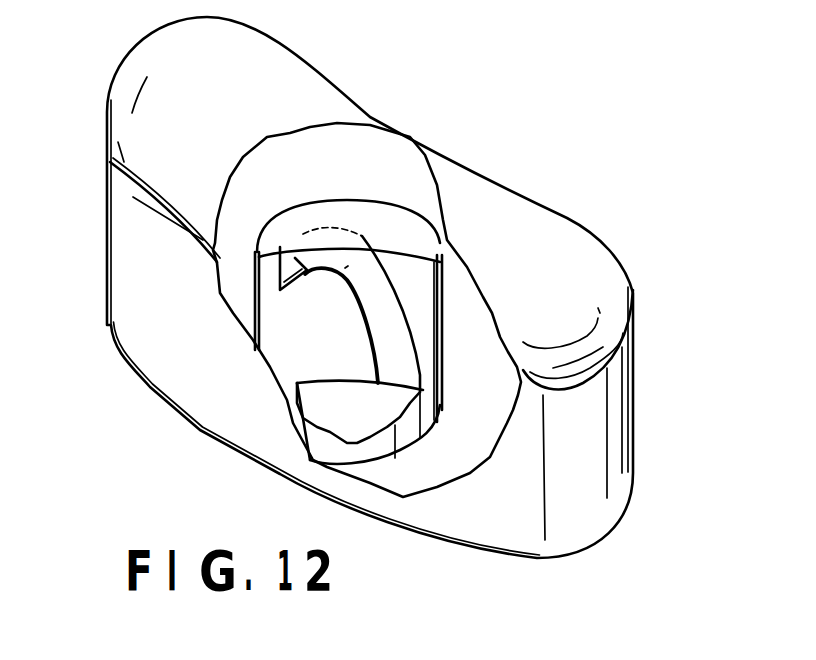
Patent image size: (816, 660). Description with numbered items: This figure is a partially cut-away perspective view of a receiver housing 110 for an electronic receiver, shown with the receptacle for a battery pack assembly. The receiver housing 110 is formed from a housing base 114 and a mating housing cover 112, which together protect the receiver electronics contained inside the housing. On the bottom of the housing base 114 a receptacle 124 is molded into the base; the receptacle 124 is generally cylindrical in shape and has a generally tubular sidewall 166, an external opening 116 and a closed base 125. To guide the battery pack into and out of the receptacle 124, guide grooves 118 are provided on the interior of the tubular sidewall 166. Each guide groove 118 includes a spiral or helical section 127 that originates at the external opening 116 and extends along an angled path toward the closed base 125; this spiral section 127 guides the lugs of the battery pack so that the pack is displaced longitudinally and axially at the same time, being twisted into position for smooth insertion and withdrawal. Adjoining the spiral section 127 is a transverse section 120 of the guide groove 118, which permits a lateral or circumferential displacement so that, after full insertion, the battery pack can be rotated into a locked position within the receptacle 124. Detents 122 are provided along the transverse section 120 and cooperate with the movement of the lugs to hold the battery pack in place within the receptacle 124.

The receiver housing 110 is at (440, 112).
The housing cover 112 is at (510, 217).
The housing base 114 is at (613, 437).
The external opening 116 is at (330, 404).
The guide grooves 118 is at (368, 295).
The transverse section 120 is at (285, 252).
The detents 122 is at (307, 270).
The receptacle 124 is at (360, 372).
The closed base 125 is at (388, 220).
The spiral section 127 is at (345, 268).
The tubular sidewall 166 is at (440, 334).